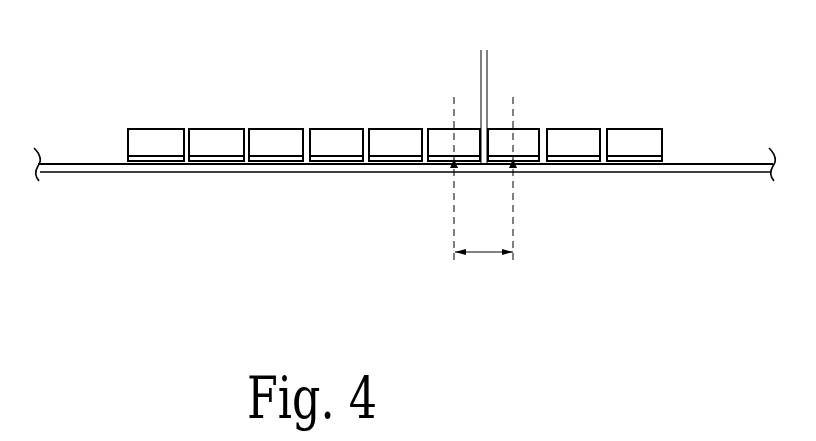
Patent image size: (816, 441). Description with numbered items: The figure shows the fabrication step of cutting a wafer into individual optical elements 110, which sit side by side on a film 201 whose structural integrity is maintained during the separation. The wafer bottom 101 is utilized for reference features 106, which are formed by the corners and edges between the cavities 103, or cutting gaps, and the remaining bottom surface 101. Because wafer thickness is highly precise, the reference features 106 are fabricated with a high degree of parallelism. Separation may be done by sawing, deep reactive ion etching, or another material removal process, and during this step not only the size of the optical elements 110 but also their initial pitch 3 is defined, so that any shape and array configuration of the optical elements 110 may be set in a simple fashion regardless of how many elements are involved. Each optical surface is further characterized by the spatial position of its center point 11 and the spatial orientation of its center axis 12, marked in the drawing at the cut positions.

The initial pitch 3 is at (484, 239).
The center point 11 is at (453, 168).
The center axis 12 is at (453, 240).
The wafer bottom surface 101 is at (631, 128).
The cavity 103 is at (427, 58).
The reference feature 106 is at (362, 128).
The optical element 110 is at (148, 143).
The film 201 is at (699, 173).